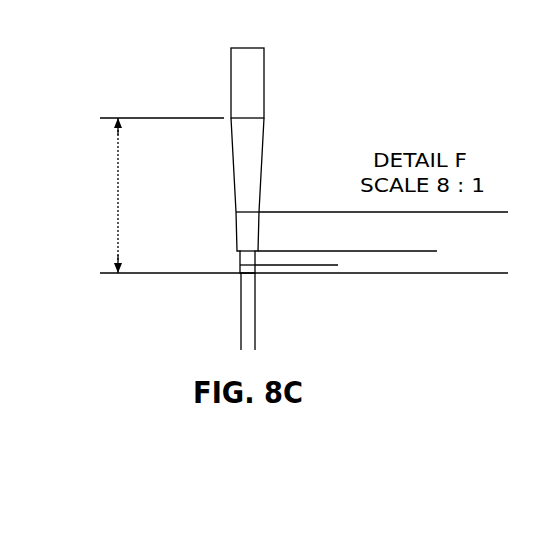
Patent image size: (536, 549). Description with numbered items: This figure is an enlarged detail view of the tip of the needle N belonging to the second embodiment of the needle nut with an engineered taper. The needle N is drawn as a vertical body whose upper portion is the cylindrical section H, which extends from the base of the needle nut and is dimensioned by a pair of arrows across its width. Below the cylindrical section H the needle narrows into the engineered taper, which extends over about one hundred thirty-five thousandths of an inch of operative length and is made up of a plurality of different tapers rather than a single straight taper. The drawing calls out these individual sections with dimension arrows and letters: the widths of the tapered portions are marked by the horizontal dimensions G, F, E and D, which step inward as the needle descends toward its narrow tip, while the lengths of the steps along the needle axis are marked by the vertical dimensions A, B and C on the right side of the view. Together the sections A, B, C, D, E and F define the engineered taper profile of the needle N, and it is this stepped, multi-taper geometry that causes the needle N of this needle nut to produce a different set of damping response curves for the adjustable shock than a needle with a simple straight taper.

The needle N is at (183, 64).
The cylindrical section H is at (302, 104).
The dimension G is at (300, 212).
The taper section F is at (295, 241).
The taper section E is at (300, 265).
The taper section D is at (290, 331).
The taper section A is at (489, 175).
The taper section B is at (417, 228).
The taper section C is at (319, 232).